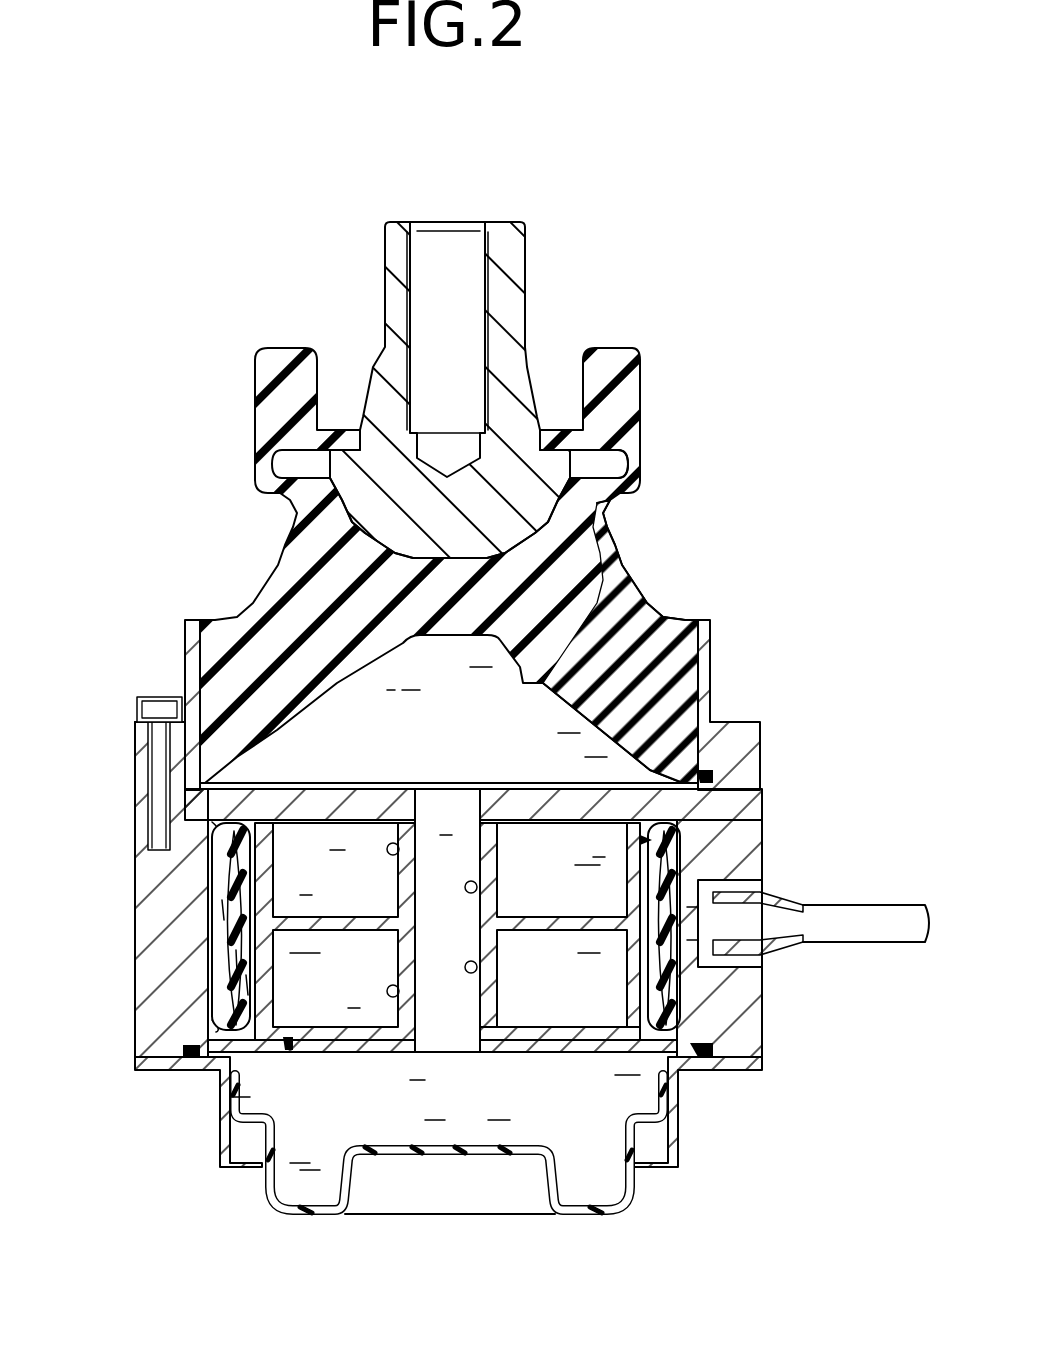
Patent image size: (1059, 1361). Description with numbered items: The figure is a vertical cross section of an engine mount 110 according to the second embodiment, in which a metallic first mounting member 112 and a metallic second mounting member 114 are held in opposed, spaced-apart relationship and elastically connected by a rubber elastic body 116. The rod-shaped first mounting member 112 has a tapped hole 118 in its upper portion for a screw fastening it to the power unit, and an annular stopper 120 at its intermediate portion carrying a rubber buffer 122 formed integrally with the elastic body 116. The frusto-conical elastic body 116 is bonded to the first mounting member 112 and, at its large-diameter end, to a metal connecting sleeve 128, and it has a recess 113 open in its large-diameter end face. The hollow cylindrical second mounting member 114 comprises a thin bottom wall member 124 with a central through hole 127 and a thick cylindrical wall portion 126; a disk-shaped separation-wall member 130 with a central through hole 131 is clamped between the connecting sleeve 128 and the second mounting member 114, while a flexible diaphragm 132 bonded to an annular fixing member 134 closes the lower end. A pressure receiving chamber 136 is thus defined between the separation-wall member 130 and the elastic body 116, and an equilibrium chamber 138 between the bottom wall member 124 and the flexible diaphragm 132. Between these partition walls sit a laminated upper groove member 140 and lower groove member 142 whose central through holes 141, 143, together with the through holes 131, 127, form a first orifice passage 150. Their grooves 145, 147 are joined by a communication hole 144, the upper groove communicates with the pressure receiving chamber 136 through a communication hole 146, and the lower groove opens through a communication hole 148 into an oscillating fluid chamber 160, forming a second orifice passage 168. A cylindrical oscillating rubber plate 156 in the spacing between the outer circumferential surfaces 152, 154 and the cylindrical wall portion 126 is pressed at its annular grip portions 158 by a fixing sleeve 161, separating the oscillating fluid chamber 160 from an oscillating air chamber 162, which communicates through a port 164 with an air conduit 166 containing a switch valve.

The engine mount 110 is at (672, 222).
The first mounting member 112 is at (545, 312).
The recess 113 is at (641, 720).
The second mounting member 114 is at (118, 898).
The elastic body 116 is at (285, 572).
The tapped hole 118 is at (418, 258).
The annular stopper 120 is at (608, 462).
The rubber buffer 122 is at (282, 357).
The bottom wall member 124 is at (343, 1047).
The cylindrical wall portion 126 is at (155, 976).
The through hole 127 is at (432, 1052).
The connecting sleeve 128 is at (711, 680).
The separation-wall member 130 is at (750, 803).
The through hole 131 is at (420, 808).
The flexible diaphragm 132 is at (300, 1212).
The fixing member 134 is at (672, 1138).
The pressure receiving chamber 136 is at (458, 714).
The equilibrium chamber 138 is at (553, 1134).
The upper groove member 140 is at (748, 843).
The central through hole 141 is at (477, 891).
The lower groove member 142 is at (290, 1043).
The central through hole 143 is at (477, 970).
The communication hole 144 is at (365, 925).
The groove 145 is at (432, 857).
The communication hole 146 is at (512, 806).
The groove 147 is at (432, 1000).
The communication hole 148 is at (625, 1012).
The first orifice passage 150 is at (455, 842).
The outer circumferential surface 152 is at (262, 878).
The outer circumferential surface 154 is at (262, 985).
The oscillating rubber plate 156 is at (240, 962).
The annular grip portions 158 is at (215, 822).
The oscillating fluid chamber 160 is at (643, 795).
The fixing sleeve 161 is at (216, 910).
The oscillating air chamber 162 is at (667, 970).
The port 164 is at (745, 903).
The air conduit 166 is at (866, 930).
The second orifice passage 168 is at (312, 834).